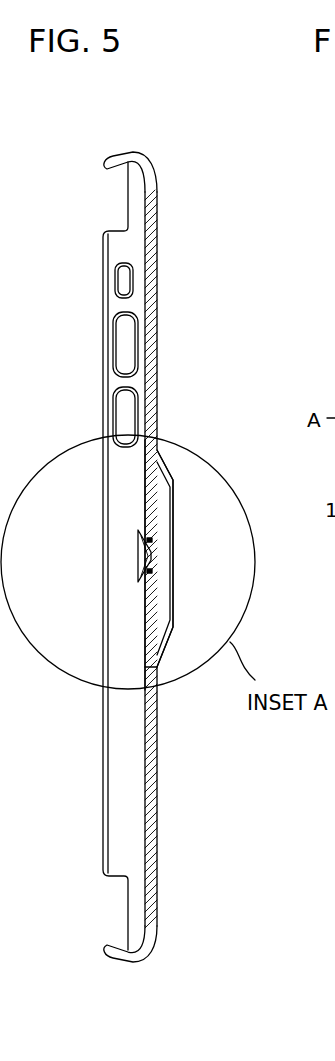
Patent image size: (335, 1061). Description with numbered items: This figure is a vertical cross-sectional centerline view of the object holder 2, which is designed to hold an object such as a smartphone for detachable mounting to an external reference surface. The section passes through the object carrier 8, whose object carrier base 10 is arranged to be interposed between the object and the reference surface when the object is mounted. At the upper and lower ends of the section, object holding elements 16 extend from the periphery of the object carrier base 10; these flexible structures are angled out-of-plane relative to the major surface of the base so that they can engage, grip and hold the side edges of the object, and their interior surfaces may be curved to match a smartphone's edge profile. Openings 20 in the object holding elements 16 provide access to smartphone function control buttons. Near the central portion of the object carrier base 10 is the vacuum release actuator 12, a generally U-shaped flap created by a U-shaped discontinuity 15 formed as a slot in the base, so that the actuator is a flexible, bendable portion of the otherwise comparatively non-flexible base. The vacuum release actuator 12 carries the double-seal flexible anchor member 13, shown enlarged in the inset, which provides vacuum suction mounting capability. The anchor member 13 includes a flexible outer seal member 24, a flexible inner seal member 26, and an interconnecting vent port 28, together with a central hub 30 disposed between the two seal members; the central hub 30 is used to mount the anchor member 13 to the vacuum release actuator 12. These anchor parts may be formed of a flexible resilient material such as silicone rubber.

The object holder 2 is at (180, 140).
The object carrier 8 is at (100, 207).
The object carrier base 10 is at (161, 834).
The vacuum release actuator 12 is at (136, 656).
The double-seal flexible anchor member 13 is at (128, 580).
The U-shaped discontinuity 15 is at (152, 668).
The object holding elements 16 is at (113, 158).
The openings 20 is at (90, 262).
The outer seal member 24 is at (162, 461).
The inner seal member 26 is at (137, 547).
The vent port 28 is at (157, 556).
The central hub 30 is at (154, 548).